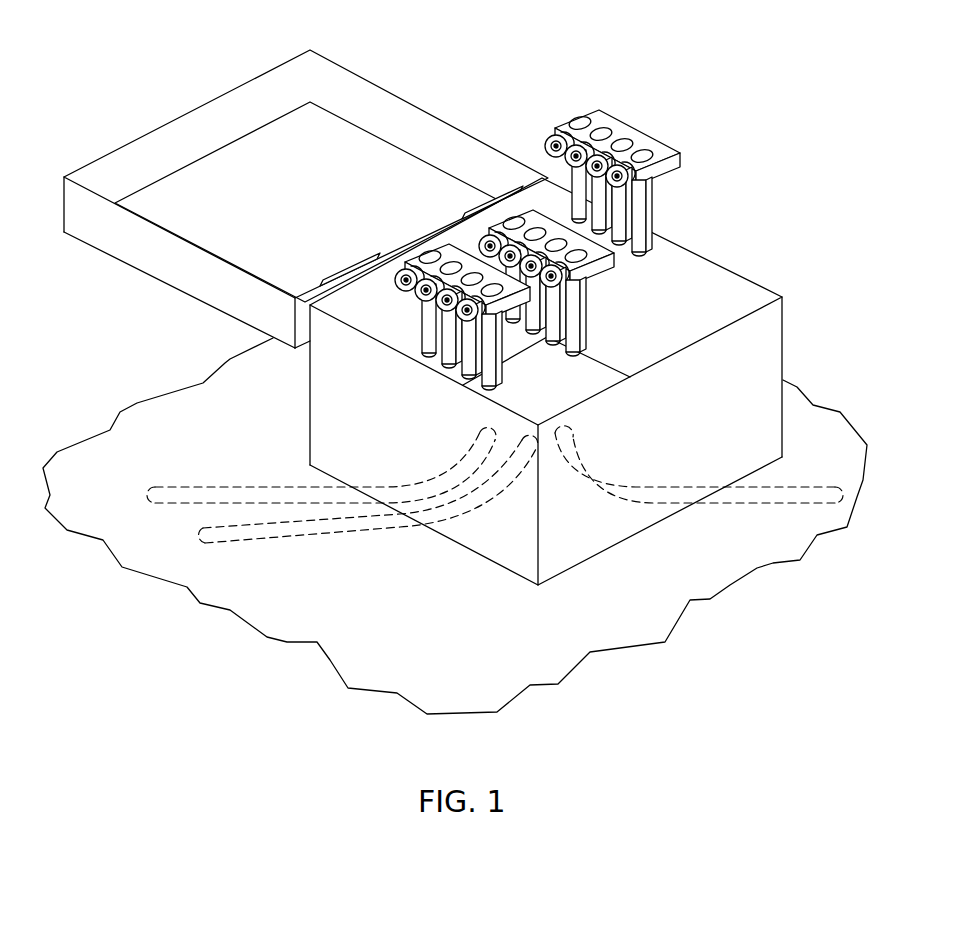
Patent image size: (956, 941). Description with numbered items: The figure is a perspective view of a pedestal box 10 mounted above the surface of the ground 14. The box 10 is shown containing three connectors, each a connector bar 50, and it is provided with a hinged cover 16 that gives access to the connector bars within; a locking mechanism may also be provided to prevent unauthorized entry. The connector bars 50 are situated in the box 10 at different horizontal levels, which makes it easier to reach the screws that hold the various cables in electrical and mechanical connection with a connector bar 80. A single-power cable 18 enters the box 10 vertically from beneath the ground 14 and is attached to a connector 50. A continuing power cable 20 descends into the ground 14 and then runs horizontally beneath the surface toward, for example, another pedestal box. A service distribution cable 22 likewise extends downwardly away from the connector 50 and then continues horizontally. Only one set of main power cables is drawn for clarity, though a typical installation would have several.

The pedestal box 10 is at (727, 283).
The ground 14 is at (465, 631).
The hinged cover 16 is at (196, 118).
The single-power cable 18 is at (250, 486).
The continuing power cable 20 is at (314, 538).
The service distribution cable 22 is at (742, 507).
The connector bar 50 is at (670, 174).
The connector bar 80 is at (633, 132).